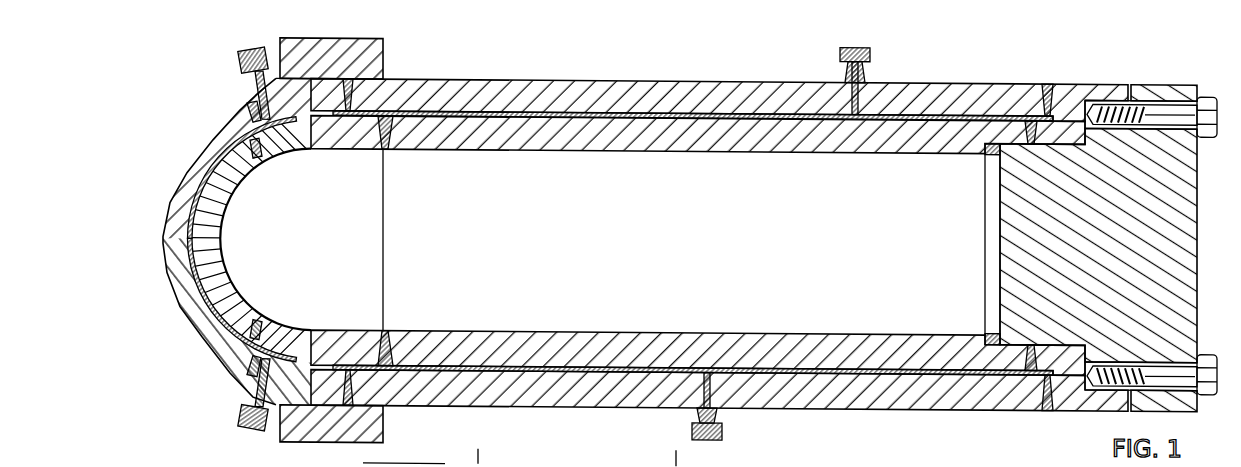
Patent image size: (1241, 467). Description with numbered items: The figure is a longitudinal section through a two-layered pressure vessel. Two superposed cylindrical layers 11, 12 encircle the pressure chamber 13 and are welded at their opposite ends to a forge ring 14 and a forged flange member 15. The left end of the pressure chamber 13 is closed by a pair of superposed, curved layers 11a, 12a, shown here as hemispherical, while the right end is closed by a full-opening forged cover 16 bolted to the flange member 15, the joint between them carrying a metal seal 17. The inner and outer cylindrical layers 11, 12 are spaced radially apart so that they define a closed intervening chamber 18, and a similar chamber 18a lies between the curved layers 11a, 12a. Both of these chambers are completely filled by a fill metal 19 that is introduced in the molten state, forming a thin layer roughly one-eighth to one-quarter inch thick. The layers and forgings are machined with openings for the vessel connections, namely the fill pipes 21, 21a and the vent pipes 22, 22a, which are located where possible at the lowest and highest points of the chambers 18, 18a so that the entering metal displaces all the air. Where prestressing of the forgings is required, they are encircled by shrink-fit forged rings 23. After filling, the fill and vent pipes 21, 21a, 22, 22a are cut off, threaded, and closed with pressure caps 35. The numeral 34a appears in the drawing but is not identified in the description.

The cylindrical layer 11 is at (532, 150).
The curved layer 11a is at (214, 264).
The cylindrical layer 12 is at (547, 80).
The curved layer 12a is at (172, 205).
The pressure chamber 13 is at (702, 241).
The forge ring 14 is at (325, 330).
The forged flange member 15 is at (1107, 90).
The forged cover 16 is at (1178, 326).
The metal seal 17 is at (985, 159).
The intervening chamber 18 is at (750, 365).
The chamber 18a is at (218, 314).
The fill metal 19 is at (194, 234).
The fill pipe 21 is at (698, 414).
The fill pipe 21a is at (256, 399).
The vent pipe 22 is at (871, 66).
The vent pipe 22a is at (255, 90).
The shrink fit forged ring 23 is at (383, 427).
The lower fitting 34a is at (580, 457).
The pressure cap 35 is at (243, 58).